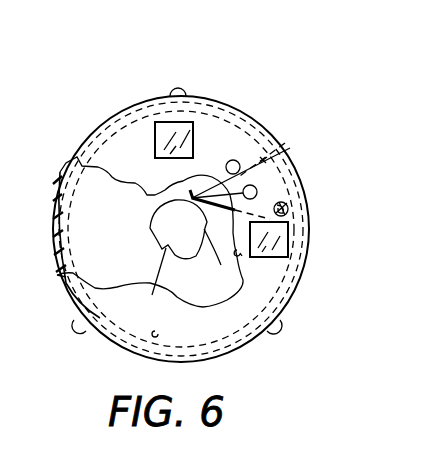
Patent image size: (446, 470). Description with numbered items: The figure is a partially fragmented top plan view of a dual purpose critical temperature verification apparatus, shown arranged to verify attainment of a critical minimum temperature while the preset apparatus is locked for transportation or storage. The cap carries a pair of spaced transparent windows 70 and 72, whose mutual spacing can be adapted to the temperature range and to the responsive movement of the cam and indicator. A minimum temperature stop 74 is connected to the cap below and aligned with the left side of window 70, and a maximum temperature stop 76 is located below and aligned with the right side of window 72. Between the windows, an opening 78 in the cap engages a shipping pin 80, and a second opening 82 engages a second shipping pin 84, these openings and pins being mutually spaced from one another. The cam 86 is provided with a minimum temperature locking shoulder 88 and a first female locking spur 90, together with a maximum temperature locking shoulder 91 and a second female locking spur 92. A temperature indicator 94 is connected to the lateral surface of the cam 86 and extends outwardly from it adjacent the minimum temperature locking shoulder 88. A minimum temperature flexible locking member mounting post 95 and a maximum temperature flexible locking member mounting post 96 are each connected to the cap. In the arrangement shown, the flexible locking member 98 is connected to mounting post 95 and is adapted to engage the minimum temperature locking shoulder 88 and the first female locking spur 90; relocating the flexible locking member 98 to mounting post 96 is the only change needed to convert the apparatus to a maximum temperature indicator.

The transparent window 70 is at (173, 130).
The transparent window 72 is at (278, 240).
The minimum temperature stop 74 is at (159, 185).
The maximum temperature stop 76 is at (241, 255).
The opening 78 is at (231, 160).
The shipping pin 80 is at (236, 160).
The second opening 82 is at (258, 193).
The second shipping pin 84 is at (256, 187).
The cam 86 is at (158, 209).
The minimum temperature locking shoulder 88 is at (192, 226).
The first female locking spur 90 is at (219, 263).
The maximum temperature locking shoulder 91 is at (150, 223).
The second female locking spur 92 is at (152, 284).
The temperature indicator 94 is at (285, 143).
The minimum temperature flexible locking member mounting post 95 is at (294, 206).
The maximum temperature flexible locking member mounting post 96 is at (150, 335).
The flexible locking member 98 is at (197, 196).